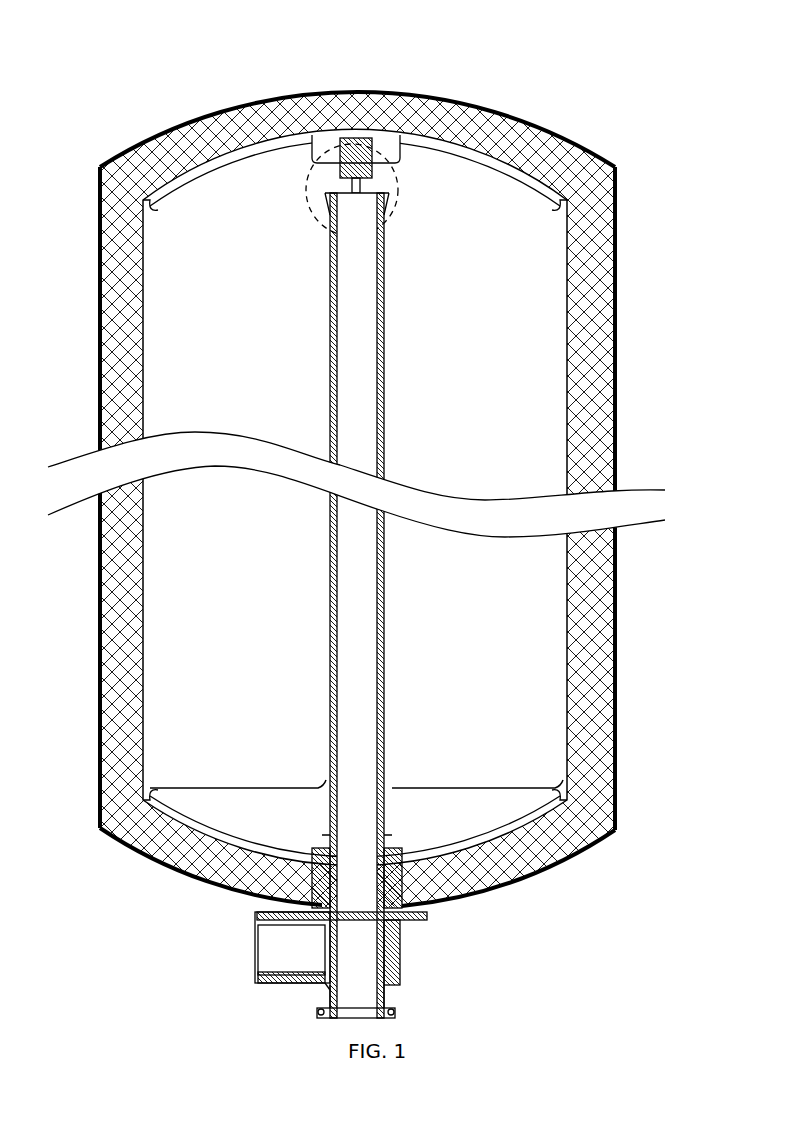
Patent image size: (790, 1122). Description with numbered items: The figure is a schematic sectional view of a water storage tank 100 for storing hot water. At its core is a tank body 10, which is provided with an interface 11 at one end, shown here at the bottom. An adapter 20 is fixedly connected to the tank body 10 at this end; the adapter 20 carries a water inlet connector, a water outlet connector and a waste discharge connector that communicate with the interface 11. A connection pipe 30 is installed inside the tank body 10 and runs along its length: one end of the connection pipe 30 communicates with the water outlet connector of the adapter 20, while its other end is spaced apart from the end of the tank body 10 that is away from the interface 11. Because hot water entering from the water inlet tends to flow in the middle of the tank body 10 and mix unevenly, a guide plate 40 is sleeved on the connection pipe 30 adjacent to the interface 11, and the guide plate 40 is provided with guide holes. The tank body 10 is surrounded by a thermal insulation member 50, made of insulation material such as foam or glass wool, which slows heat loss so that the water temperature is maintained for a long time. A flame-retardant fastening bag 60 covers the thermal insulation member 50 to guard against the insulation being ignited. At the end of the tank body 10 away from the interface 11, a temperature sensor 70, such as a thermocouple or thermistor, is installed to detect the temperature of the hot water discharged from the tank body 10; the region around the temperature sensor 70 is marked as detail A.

The water storage tank 100 is at (373, 23).
The tank body 10 is at (567, 440).
The interface 11 is at (408, 883).
The adapter 20 is at (400, 948).
The connection pipe 30 is at (385, 600).
The guide plate 40 is at (530, 787).
The thermal insulation member 50 is at (600, 318).
The flame-retardant fastening bag 60 is at (616, 218).
The temperature sensor 70 is at (357, 148).
The detail region A is at (397, 178).